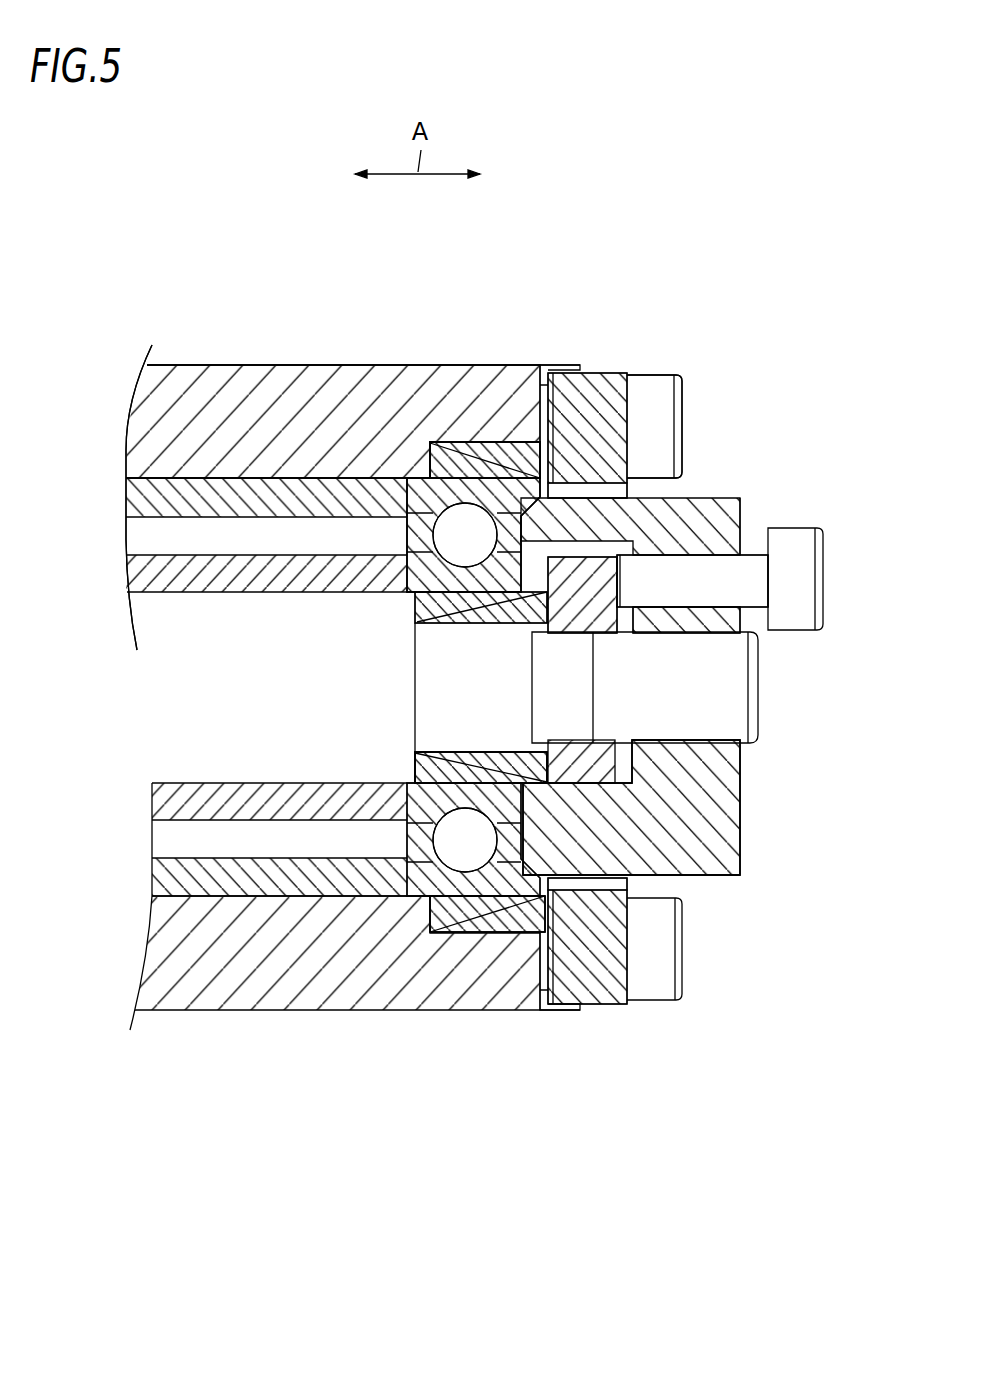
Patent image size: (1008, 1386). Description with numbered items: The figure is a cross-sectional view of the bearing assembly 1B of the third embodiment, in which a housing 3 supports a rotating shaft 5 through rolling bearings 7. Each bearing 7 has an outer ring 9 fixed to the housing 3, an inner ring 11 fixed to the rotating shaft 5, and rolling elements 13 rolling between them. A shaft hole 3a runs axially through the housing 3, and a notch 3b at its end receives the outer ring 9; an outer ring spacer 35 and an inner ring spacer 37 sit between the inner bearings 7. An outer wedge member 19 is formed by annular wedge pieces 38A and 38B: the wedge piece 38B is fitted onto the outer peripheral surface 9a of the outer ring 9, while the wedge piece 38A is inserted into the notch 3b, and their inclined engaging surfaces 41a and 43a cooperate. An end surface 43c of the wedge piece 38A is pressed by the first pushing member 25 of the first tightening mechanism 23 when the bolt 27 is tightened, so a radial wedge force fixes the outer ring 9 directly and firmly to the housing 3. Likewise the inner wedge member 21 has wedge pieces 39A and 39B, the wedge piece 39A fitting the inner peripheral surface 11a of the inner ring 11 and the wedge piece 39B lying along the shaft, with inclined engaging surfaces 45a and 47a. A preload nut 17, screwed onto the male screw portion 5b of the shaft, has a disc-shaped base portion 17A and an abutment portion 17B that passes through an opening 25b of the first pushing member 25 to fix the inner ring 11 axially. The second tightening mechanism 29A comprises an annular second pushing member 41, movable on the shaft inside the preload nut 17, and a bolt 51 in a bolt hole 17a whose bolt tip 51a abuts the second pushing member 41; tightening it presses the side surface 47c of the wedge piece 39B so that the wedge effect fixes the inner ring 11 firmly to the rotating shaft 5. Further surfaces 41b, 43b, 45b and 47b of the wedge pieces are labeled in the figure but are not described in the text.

The bearing assembly 1B is at (152, 230).
The housing 3 is at (187, 346).
The shaft hole 3a is at (190, 503).
The notch 3b is at (535, 918).
The rotating shaft 5 is at (760, 672).
The male screw portion 5b is at (713, 618).
The rolling bearing 7 is at (243, 303).
The outer ring 9 is at (470, 500).
The outer peripheral surface 9a is at (375, 980).
The inner ring 11 is at (418, 535).
The inner peripheral surface 11a is at (480, 750).
The rolling element 13 is at (445, 520).
The preload nut 17 is at (828, 818).
The base portion 17A is at (598, 868).
The abutment portion 17B is at (740, 860).
The bolt hole 17a is at (748, 552).
The outer wedge member 19 is at (545, 1085).
The inner wedge member 21 is at (125, 1145).
The first tightening mechanism 23 is at (666, 322).
The first pushing member 25 is at (606, 358).
The opening 25b is at (568, 826).
The bolt 27 is at (683, 398).
The second tightening mechanism 29A is at (788, 505).
The outer ring spacer 35 is at (208, 495).
The inner ring spacer 37 is at (200, 578).
The wedge piece 38A is at (504, 949).
The wedge piece 38B is at (418, 930).
The wedge piece 39A is at (432, 768).
The wedge piece 39B is at (463, 734).
The second pushing member 41 is at (615, 755).
The inclined engaging surface 41a is at (440, 445).
The retainer second surface 41b is at (490, 445).
The inclined engaging surface 43a is at (520, 460).
The preload member second surface 43b is at (540, 470).
The end surface 43c is at (558, 472).
The inclined engaging surface 45a is at (440, 600).
The pressing second surface 45b is at (413, 573).
The inclined engaging surface 47a is at (445, 750).
The wedge second surface 47b is at (398, 766).
The side surface 47c is at (565, 610).
The bolt 51 is at (839, 567).
The bolt tip 51a is at (603, 542).